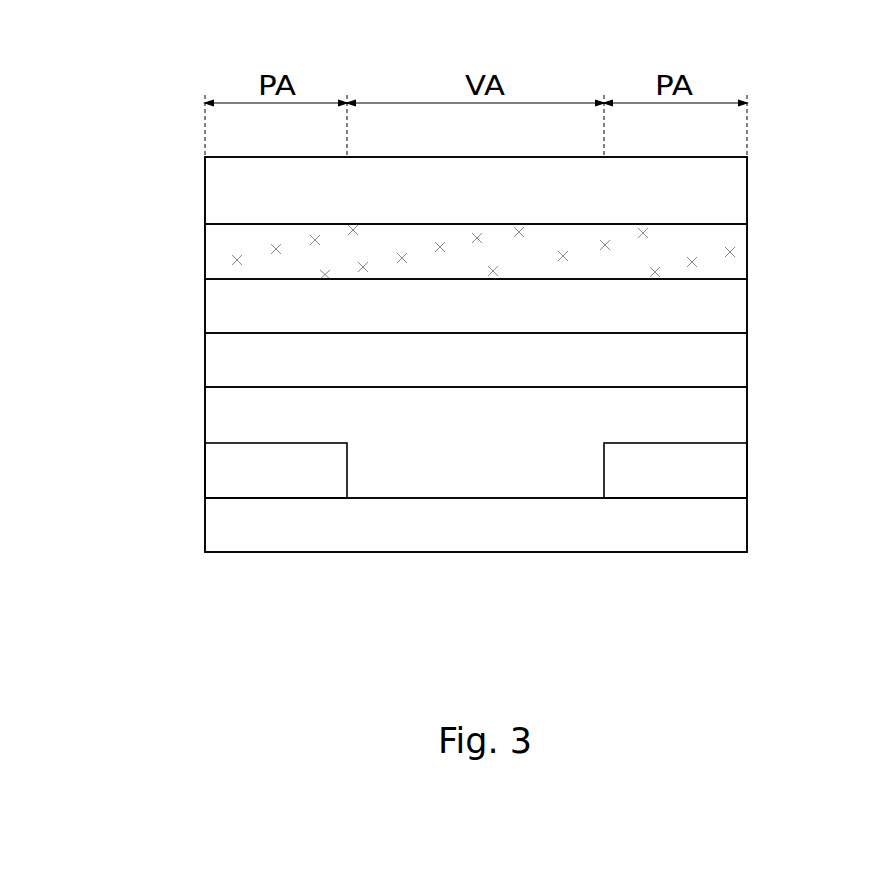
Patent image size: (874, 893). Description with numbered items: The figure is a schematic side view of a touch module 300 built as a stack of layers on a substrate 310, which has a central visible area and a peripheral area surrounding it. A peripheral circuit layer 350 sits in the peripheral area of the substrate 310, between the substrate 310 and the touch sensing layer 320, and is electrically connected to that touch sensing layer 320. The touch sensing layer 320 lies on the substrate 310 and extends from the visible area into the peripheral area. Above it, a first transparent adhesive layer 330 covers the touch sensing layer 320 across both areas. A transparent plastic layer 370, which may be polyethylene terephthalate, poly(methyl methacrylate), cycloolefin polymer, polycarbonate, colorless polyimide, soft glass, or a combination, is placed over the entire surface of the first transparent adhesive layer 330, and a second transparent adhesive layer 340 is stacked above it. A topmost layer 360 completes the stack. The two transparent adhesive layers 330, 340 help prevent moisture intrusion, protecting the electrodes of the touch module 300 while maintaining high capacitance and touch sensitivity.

The touch module 300 is at (91, 56).
The substrate 310 is at (745, 520).
The touch sensing layer 320 is at (745, 410).
The first transparent adhesive layer 330 is at (745, 361).
The second transparent adhesive layer 340 is at (745, 250).
The peripheral circuit layer 350 is at (745, 465).
The cover layer 360 is at (745, 187).
The transparent plastic layer 370 is at (745, 308).